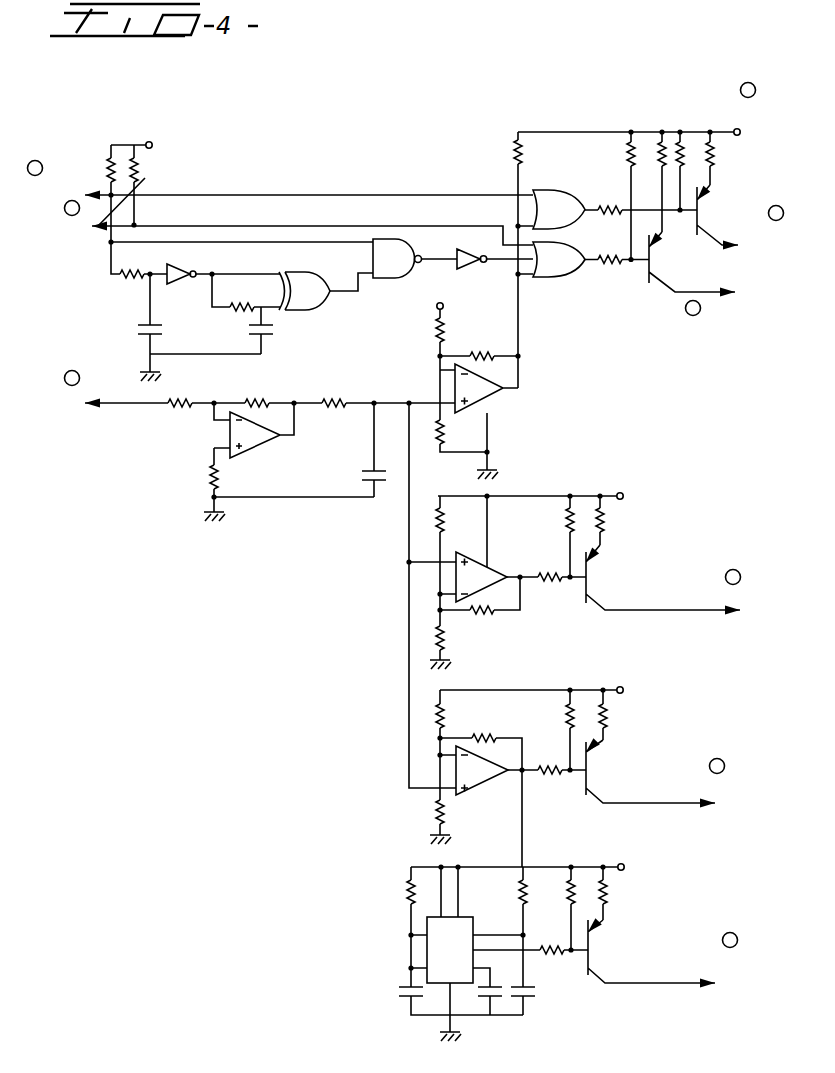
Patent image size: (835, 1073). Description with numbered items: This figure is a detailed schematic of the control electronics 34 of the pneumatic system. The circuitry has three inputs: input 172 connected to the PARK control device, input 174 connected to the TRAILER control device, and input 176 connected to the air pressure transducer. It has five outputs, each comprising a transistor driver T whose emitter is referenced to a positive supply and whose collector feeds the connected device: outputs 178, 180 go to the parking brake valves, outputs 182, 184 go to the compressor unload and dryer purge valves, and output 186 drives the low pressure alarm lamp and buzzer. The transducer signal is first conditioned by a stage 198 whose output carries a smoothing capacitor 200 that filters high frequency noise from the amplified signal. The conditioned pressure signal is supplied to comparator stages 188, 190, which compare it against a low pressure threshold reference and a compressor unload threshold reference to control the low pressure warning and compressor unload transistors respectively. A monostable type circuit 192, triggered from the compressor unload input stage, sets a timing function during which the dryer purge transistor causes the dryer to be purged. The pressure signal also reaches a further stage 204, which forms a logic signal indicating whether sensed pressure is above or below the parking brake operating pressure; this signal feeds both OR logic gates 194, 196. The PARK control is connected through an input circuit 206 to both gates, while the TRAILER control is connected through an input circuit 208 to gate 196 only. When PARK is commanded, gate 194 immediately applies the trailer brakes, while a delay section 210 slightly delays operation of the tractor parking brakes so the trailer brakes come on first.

The control electronics 34 is at (437, 128).
The input 172 is at (96, 192).
The input 174 is at (312, 207).
The input 176 is at (100, 400).
The output 178 is at (674, 293).
The output 180 is at (720, 244).
The output 182 is at (641, 803).
The output 184 is at (657, 983).
The output 186 is at (638, 608).
The comparator stage 188 is at (495, 568).
The comparator stage 190 is at (478, 787).
The monostable type circuit 192 is at (474, 918).
The logic gate 194 is at (585, 177).
The logic gate 196 is at (568, 279).
The stage 198 is at (262, 449).
The smoothing capacitor 200 is at (362, 472).
The stage 204 is at (495, 393).
The input circuit 206 is at (111, 195).
The input circuit 208 is at (135, 226).
The delay section 210 is at (325, 299).